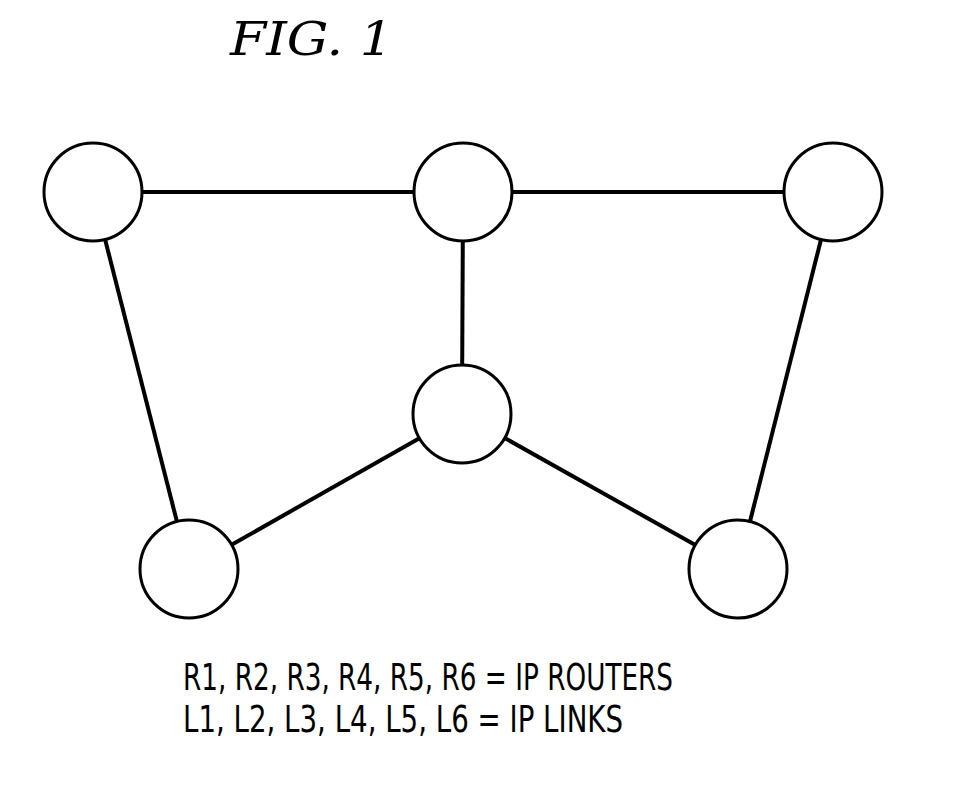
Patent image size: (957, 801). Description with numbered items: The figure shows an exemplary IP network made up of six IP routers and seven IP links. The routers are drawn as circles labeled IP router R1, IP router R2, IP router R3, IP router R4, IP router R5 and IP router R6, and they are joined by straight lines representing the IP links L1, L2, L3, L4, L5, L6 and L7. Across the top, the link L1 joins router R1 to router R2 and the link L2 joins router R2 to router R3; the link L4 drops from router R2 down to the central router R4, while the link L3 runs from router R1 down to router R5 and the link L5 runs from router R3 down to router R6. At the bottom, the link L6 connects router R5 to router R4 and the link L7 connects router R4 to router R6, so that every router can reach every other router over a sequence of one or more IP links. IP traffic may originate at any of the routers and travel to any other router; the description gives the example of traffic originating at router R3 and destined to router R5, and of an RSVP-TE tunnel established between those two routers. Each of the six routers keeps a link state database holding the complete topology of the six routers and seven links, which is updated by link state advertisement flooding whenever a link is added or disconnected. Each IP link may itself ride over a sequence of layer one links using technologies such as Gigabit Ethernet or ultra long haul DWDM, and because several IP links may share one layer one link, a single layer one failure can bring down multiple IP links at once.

The IP router R1 is at (93, 192).
The IP router R2 is at (463, 192).
The IP router R3 is at (833, 192).
The IP router R4 is at (462, 414).
The IP router R5 is at (189, 569).
The IP router R6 is at (738, 569).
The IP link L1 is at (278, 170).
The IP link L2 is at (648, 170).
The IP link L3 is at (144, 381).
The IP link L4 is at (481, 303).
The IP link L5 is at (789, 381).
The IP link L6 is at (326, 491).
The IP link L7 is at (600, 491).